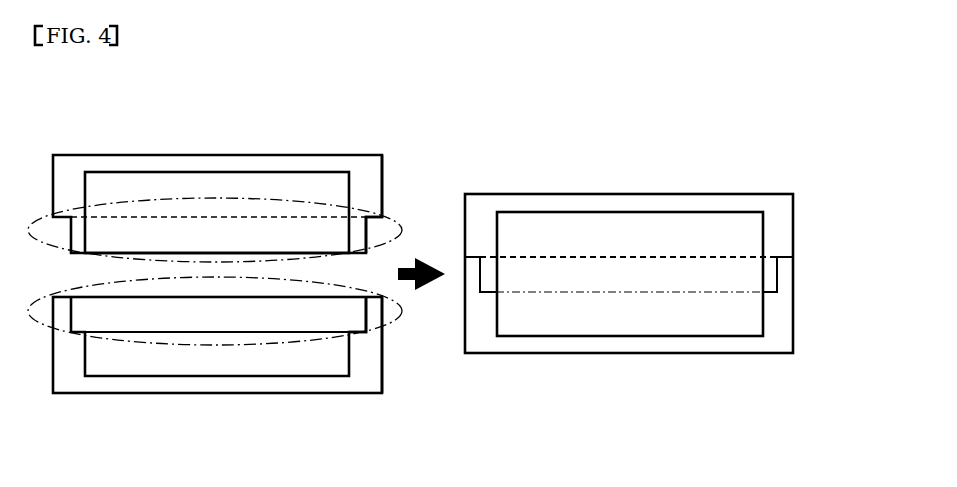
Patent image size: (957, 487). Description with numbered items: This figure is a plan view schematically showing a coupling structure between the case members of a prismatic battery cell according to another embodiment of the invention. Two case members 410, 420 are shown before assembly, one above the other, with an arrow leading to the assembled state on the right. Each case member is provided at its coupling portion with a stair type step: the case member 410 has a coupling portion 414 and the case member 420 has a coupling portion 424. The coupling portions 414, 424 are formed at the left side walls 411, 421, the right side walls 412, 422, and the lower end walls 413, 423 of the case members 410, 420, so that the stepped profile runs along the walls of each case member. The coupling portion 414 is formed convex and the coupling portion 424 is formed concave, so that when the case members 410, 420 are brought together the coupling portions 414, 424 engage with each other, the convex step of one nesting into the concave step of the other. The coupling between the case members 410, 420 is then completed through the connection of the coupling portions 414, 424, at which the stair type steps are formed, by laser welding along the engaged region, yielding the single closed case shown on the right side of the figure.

The case member 410 is at (282, 179).
The left side wall 411 is at (53, 180).
The right side wall 412 is at (382, 190).
The lower end wall 413 is at (167, 180).
The coupling portion 414 is at (398, 222).
The case member 420 is at (285, 369).
The left side wall 421 is at (53, 353).
The right side wall 422 is at (383, 343).
The lower end wall 423 is at (195, 360).
The coupling portion 424 is at (400, 318).